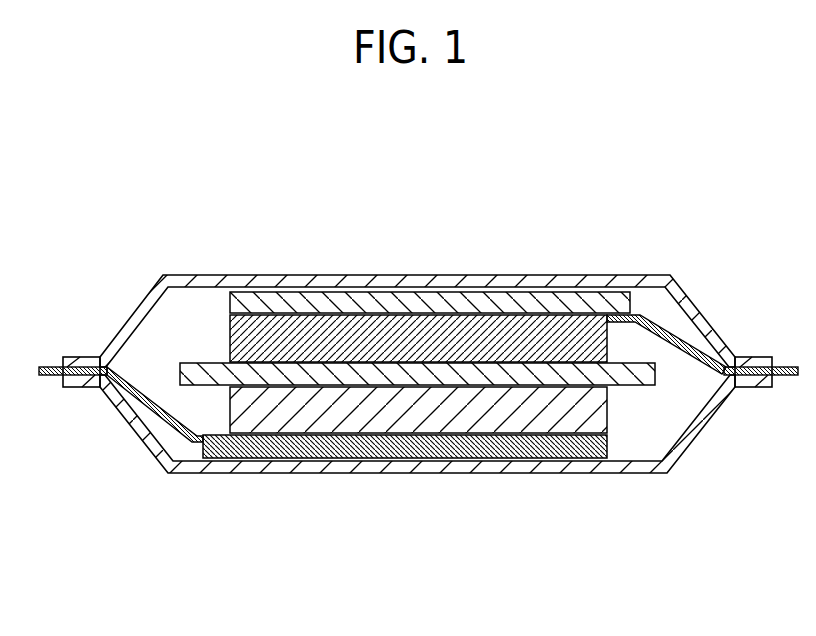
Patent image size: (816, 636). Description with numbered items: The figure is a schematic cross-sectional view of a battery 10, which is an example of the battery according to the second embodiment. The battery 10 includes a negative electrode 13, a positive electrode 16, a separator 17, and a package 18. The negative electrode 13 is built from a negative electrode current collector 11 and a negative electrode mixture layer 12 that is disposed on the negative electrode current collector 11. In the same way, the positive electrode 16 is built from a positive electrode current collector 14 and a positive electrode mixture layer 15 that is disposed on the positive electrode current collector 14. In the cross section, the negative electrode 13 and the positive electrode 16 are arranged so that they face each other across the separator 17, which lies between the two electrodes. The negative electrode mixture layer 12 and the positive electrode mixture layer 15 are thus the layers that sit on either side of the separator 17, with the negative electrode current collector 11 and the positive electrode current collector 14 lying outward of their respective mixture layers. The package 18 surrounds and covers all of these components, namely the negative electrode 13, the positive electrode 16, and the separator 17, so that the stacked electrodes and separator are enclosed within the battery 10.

The battery 10 is at (446, 110).
The negative electrode current collector 11 is at (330, 443).
The negative electrode mixture layer 12 is at (263, 420).
The negative electrode 13 is at (405, 494).
The positive electrode current collector 14 is at (460, 305).
The positive electrode mixture layer 15 is at (522, 335).
The positive electrode 16 is at (430, 261).
The separator 17 is at (197, 370).
The package 18 is at (677, 447).